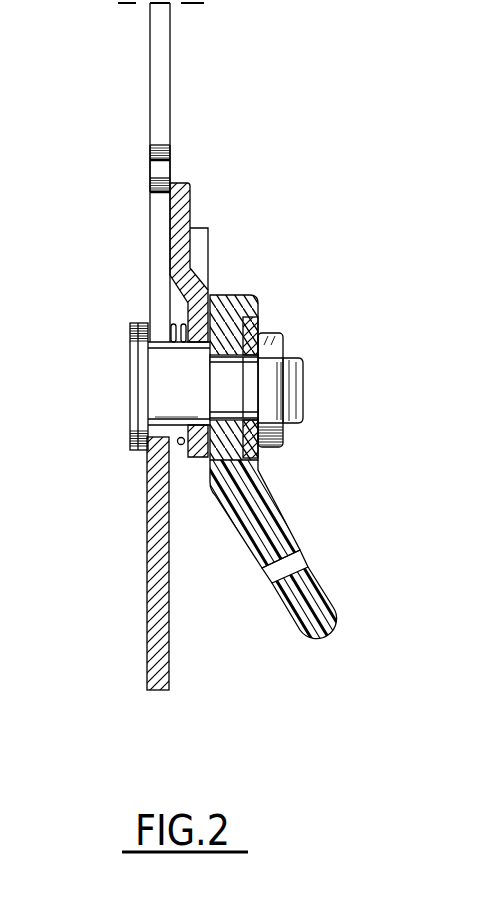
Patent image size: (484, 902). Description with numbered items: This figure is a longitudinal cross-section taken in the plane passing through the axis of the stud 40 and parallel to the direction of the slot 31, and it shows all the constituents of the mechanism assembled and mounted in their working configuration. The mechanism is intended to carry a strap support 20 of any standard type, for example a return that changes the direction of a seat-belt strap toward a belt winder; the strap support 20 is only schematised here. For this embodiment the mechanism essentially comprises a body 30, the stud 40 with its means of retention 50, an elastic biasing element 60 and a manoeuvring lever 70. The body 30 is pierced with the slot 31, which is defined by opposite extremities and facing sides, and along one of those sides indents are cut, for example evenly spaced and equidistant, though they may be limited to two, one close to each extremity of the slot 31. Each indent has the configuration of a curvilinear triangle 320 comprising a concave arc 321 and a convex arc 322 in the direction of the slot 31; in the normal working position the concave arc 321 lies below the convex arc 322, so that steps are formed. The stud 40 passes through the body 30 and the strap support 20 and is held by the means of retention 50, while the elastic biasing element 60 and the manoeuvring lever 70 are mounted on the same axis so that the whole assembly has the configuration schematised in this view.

The strap support 20 is at (284, 531).
The body 30 is at (144, 613).
The slot 31 is at (165, 98).
The curvilinear triangle 320 is at (234, 156).
The concave arc 321 is at (158, 188).
The convex arc 322 is at (155, 152).
The stud 40 is at (127, 399).
The means of retention 50 is at (291, 351).
The elastic biasing element 60 is at (170, 325).
The manoeuvring lever 70 is at (202, 252).